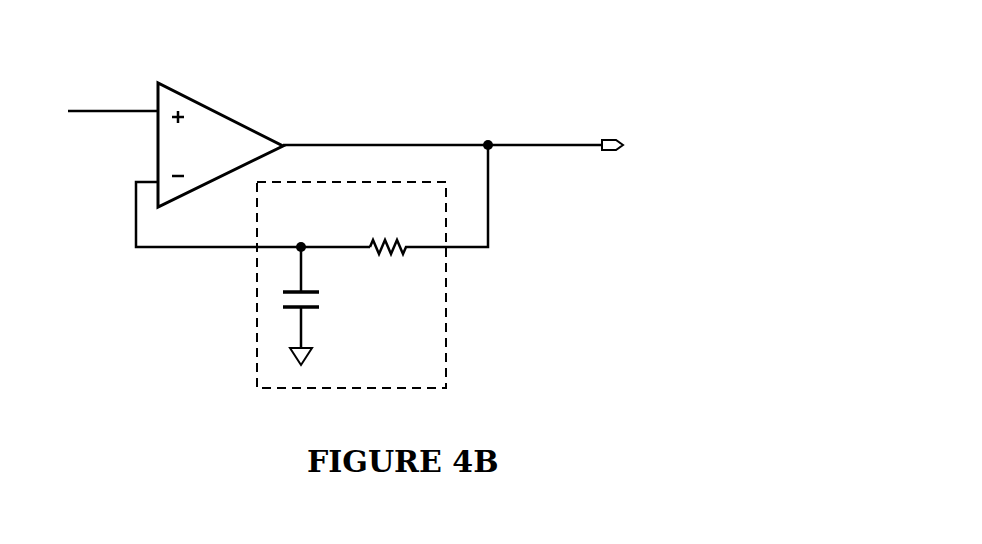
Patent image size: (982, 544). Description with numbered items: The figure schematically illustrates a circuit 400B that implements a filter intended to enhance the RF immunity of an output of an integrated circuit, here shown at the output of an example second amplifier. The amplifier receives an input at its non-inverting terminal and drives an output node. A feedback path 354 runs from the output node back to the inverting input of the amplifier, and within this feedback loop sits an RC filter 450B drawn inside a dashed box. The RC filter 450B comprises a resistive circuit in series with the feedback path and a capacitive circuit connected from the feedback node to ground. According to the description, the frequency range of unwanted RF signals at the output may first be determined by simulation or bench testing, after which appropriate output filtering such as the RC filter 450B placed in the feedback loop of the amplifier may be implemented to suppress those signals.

The circuit 400B is at (469, 194).
The feedback line 354 is at (188, 247).
The RC filter 450B is at (446, 378).